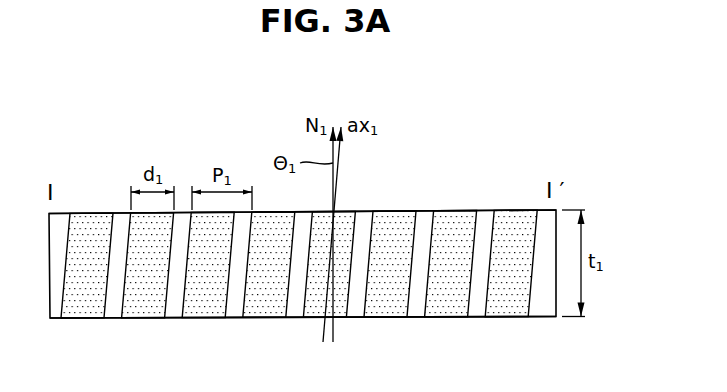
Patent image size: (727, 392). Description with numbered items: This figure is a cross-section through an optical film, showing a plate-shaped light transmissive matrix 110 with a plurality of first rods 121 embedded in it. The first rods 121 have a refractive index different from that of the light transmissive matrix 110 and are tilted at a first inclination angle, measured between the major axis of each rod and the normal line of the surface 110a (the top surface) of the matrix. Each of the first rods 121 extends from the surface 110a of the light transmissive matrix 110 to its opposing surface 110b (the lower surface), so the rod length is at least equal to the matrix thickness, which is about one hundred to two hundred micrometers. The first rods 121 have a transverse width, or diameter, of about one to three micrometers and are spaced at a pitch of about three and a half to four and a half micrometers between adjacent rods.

The light transmissive matrix 110 is at (485, 225).
The surface of the light transmissive matrix 110a is at (426, 210).
The opposing surface of the light transmissive matrix 110b is at (415, 318).
The first rods 121 is at (393, 225).